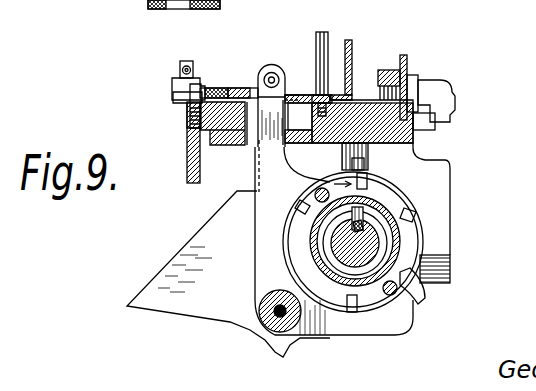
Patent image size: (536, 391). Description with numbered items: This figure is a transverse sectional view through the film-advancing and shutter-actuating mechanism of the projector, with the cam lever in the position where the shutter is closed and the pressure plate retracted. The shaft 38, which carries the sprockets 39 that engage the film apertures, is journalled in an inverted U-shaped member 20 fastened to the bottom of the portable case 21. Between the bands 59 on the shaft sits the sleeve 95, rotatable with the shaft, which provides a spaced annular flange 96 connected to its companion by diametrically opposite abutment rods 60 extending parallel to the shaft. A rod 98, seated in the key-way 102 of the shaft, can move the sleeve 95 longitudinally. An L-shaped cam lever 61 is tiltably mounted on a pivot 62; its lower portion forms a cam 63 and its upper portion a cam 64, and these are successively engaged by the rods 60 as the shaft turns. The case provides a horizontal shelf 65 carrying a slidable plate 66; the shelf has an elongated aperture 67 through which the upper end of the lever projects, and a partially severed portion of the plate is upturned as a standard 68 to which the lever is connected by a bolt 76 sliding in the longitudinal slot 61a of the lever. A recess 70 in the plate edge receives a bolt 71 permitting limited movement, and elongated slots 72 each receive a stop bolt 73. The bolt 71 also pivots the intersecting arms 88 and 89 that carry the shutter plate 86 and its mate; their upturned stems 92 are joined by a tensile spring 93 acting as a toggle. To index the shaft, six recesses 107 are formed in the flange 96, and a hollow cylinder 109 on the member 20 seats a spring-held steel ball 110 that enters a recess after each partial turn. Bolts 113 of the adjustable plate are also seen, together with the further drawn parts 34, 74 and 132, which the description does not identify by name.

The inverted U-shaped member 20 is at (417, 142).
The portable case 21 is at (184, 171).
The plate 34 is at (175, 260).
The shaft 38 is at (330, 258).
The sprockets 39 is at (420, 200).
The bands 59 is at (417, 210).
The abutment rods 60 is at (300, 204).
The cam lever 61 is at (257, 173).
The longitudinal slot 61a is at (271, 72).
The pivot 62 is at (263, 306).
The cam 63 is at (405, 290).
The cam 64 is at (240, 190).
The horizontal shelf 65 is at (206, 140).
The plate 66 is at (190, 127).
The elongated aperture 67 is at (240, 145).
The standard 68 is at (260, 73).
The recess 70 is at (175, 97).
The bolt 71 is at (190, 110).
The elongated slots 72 is at (300, 116).
The bolt 73 is at (300, 94).
The post 74 is at (352, 50).
The bolt 76 is at (284, 70).
The shutter plate 86 is at (322, 32).
The arm 88 is at (221, 88).
The arm 89 is at (241, 88).
The stems 92 is at (181, 66).
The tensile spring 93 is at (188, 61).
The sleeve 95 is at (407, 57).
The annular flange 96 is at (400, 225).
The rod 98 is at (335, 243).
The key-way 102 is at (388, 248).
The recesses 107 is at (372, 182).
The hollow cylinder 109 is at (342, 156).
The steel ball 110 is at (368, 157).
The bolts 113 is at (410, 76).
The knob 132 is at (455, 95).